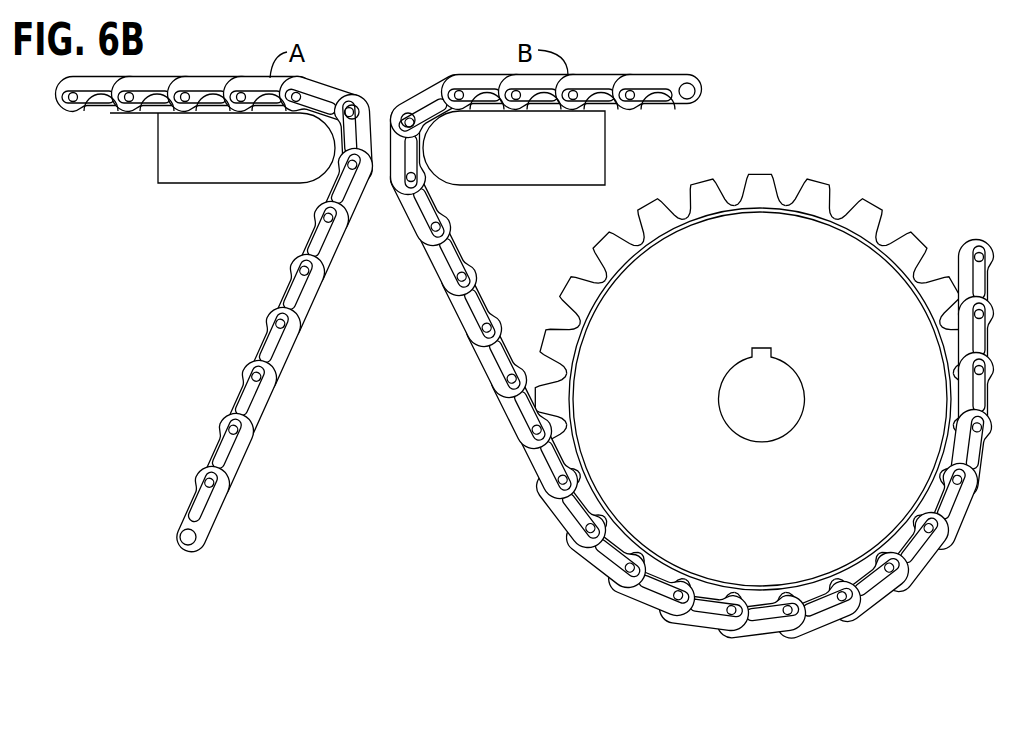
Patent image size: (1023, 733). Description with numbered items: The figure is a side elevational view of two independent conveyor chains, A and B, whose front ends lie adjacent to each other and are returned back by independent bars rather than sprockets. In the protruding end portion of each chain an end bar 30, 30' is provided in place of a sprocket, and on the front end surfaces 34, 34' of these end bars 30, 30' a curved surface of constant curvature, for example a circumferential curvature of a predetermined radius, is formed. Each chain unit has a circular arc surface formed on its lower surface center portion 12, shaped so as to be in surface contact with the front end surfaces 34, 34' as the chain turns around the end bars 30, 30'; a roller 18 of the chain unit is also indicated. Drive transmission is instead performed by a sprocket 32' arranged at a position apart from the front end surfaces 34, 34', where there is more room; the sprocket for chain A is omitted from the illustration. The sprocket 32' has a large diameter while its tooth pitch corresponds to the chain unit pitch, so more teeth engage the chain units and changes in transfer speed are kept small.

The lower surface center portion 12 is at (345, 121).
The roller 18 is at (190, 112).
The end bar 30 is at (222, 174).
The end bar 30' is at (514, 173).
The sprocket 32' is at (759, 392).
The front end surface 34 is at (323, 139).
The front end surface 34' is at (445, 120).